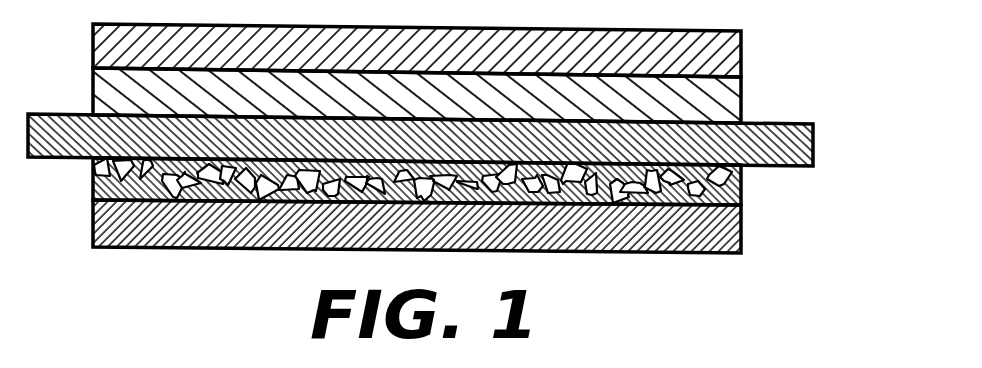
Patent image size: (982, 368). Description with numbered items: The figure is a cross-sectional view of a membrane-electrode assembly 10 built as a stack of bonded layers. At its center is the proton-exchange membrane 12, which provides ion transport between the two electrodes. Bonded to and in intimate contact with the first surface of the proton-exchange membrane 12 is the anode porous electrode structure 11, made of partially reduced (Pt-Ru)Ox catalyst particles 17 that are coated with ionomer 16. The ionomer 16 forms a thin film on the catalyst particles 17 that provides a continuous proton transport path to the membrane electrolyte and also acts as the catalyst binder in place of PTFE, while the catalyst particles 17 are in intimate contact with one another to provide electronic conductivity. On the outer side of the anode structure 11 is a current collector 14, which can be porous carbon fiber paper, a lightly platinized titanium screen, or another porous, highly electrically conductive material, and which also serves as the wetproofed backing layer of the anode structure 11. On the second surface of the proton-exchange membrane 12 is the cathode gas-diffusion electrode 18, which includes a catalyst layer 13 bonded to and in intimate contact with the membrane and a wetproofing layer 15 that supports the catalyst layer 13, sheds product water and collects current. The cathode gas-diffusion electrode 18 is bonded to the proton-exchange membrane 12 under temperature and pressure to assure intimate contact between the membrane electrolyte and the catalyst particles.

The membrane-electrode assembly 10 is at (873, 253).
The anode porous electrode structure 11 is at (741, 188).
The proton-exchange membrane 12 is at (813, 143).
The catalyst layer 13 is at (741, 95).
The current collector 14 is at (741, 230).
The wetproofing layer 15 is at (741, 48).
The ionomer 16 is at (97, 169).
The partially reduced catalyst particles 17 is at (137, 190).
The cathode gas-diffusion electrode 18 is at (812, 32).